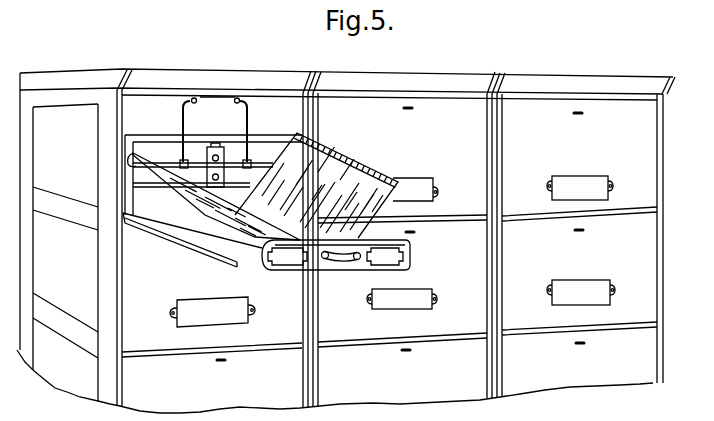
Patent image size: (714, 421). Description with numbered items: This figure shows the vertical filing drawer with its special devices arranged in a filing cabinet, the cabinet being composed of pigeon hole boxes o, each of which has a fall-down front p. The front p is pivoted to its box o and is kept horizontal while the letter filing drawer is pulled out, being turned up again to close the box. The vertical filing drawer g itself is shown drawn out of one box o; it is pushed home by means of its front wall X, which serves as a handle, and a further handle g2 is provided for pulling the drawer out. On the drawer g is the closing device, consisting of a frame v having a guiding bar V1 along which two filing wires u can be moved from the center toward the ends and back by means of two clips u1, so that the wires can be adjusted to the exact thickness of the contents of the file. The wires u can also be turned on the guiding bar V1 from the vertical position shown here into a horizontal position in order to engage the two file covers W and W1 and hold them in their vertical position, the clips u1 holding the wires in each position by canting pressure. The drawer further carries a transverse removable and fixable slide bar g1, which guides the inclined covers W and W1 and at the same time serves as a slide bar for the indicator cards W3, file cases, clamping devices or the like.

The fall-down front p is at (392, 254).
The closing device frame v is at (133, 200).
The pigeon hole box o is at (216, 97).
The filing wires u is at (181, 120).
The clips u1 is at (182, 161).
The guiding bar V1 is at (198, 160).
The file cover W1 is at (193, 192).
The file cover W is at (341, 158).
The indicator cards W3 is at (362, 168).
The slide bar g1 is at (224, 238).
The front wall X is at (410, 264).
The vertical filing drawer g is at (326, 265).
The handle g2 is at (350, 259).